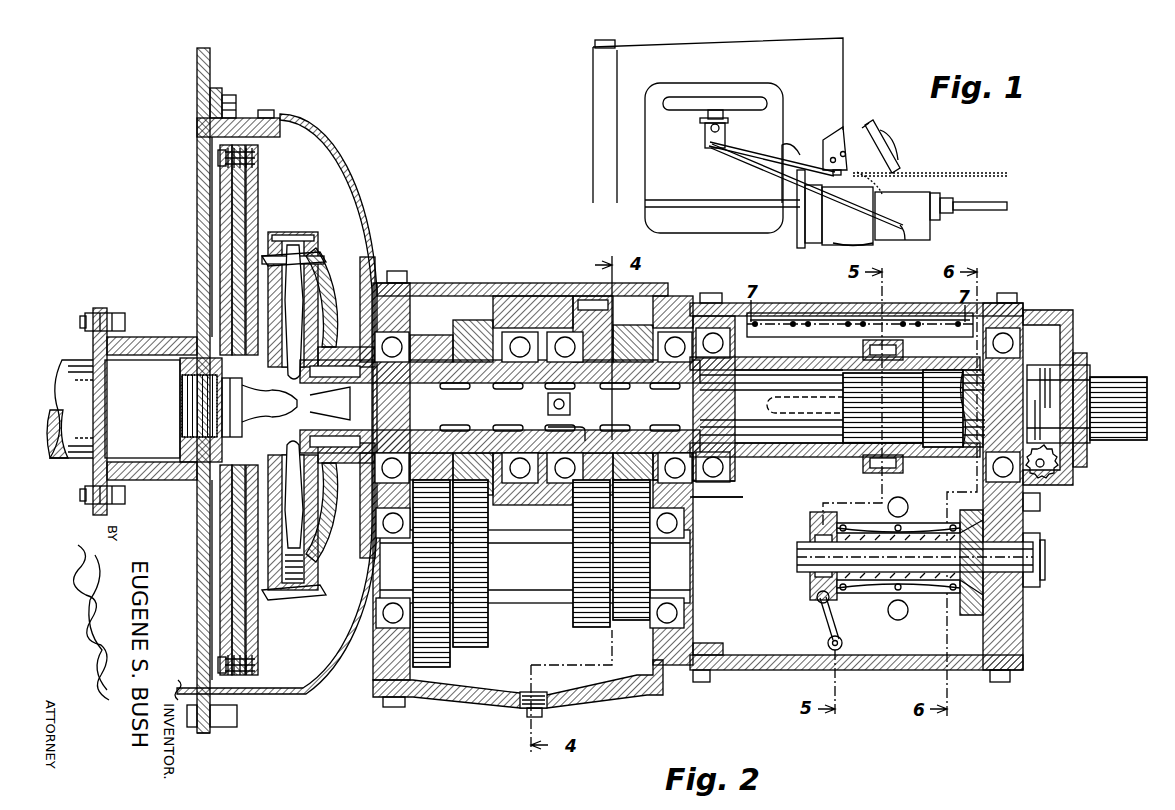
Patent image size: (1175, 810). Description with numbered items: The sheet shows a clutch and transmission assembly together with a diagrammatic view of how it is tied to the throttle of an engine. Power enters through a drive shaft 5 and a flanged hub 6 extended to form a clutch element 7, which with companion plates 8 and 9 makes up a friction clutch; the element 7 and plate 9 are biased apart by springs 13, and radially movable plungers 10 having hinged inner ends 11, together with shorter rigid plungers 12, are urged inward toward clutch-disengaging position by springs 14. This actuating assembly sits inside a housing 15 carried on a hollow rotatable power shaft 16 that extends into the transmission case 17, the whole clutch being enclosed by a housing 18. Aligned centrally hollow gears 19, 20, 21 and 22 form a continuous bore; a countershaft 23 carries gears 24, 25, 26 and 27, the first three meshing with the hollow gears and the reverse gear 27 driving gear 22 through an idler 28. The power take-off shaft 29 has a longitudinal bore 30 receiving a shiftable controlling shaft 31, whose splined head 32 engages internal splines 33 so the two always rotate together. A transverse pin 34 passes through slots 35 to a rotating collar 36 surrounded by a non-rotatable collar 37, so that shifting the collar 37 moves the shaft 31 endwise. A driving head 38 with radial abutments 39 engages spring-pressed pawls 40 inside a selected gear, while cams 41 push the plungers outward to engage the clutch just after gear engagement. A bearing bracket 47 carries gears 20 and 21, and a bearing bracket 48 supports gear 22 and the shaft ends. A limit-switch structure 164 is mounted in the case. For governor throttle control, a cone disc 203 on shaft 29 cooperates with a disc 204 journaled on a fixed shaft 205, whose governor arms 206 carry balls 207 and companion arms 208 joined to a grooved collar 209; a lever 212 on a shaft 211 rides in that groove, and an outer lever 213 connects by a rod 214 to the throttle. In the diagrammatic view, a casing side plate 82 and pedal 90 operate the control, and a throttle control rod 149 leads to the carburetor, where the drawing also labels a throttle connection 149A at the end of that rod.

In FIG. 2, the drive shaft 5 is at (70, 365).
In FIG. 2, the flanged hub 6 is at (108, 313).
In FIG. 2, the clutch element 7 is at (220, 243).
In FIG. 2, the clutch plate 8 is at (238, 210).
In FIG. 2, the clutch plate 9 is at (258, 197).
In FIG. 2, the plunger 10 is at (327, 262).
In FIG. 2, the hinged inner end 11 is at (303, 375).
In FIG. 2, the plunger 12 is at (300, 477).
In FIG. 2, the spring 13 is at (258, 157).
In FIG. 2, the spring 14 is at (297, 240).
In FIG. 2, the housing 15 is at (328, 290).
In FIG. 2, the hollow rotatable power shaft 16 is at (408, 385).
In FIG. 1, the transmission case 17 is at (863, 238).
In FIG. 2, the transmission case 17 is at (465, 283).
In FIG. 2, the housing 18 is at (302, 687).
In FIG. 2, the hollow gear 19 is at (425, 338).
In FIG. 2, the hollow gear 20 is at (470, 325).
In FIG. 2, the hollow gear 21 is at (593, 302).
In FIG. 2, the hollow gear 22 is at (635, 338).
In FIG. 2, the countershaft 23 is at (530, 601).
In FIG. 2, the countershaft gear 24 is at (430, 664).
In FIG. 2, the countershaft gear 25 is at (475, 647).
In FIG. 2, the countershaft gear 26 is at (580, 628).
In FIG. 2, the reverse driving gear 27 is at (628, 620).
In FIG. 2, the idler 28 is at (698, 504).
In FIG. 1, the power take-off shaft 29 is at (950, 210).
In FIG. 2, the power take-off shaft 29 is at (1095, 375).
In FIG. 2, the longitudinal bore 30 is at (770, 450).
In FIG. 2, the transmission and clutch-controlling shaft 31 is at (690, 405).
In FIG. 2, the splined head 32 is at (848, 385).
In FIG. 2, the internal splines 33 is at (733, 430).
In FIG. 2, the transverse pin 34 is at (872, 405).
In FIG. 2, the slot 35 is at (935, 435).
In FIG. 2, the rotating collar 36 is at (895, 472).
In FIG. 2, the non-rotatable collar 37 is at (863, 470).
In FIG. 2, the driving head 38 is at (580, 425).
In FIG. 2, the radial abutment 39 is at (548, 404).
In FIG. 2, the spring-pressed pawl 40 is at (460, 389).
In FIG. 2, the cam 41 is at (246, 398).
In FIG. 2, the bearing bracket 47 is at (522, 502).
In FIG. 2, the bearing bracket 48 is at (738, 497).
In FIG. 1, the side plate 82 is at (835, 132).
In FIG. 1, the pedal 90 is at (885, 145).
In FIG. 1, the throttle control rod 149 is at (795, 165).
In FIG. 1, the seat pivot bracket 149A is at (705, 138).
In FIG. 2, the limit-switch structure 164 is at (823, 315).
In FIG. 2, the cone disc 203 is at (1035, 315).
In FIG. 2, the disc 204 is at (975, 617).
In FIG. 2, the shaft 205 is at (1030, 585).
In FIG. 2, the governor arm 206 is at (927, 593).
In FIG. 2, the governor ball 207 is at (900, 620).
In FIG. 2, the companion arm 208 is at (870, 588).
In FIG. 2, the grooved collar 209 is at (810, 586).
In FIG. 2, the shaft 211 is at (828, 644).
In FIG. 2, the lever 212 is at (826, 620).
In FIG. 1, the lever 213 is at (908, 232).
In FIG. 1, the rod 214 is at (780, 171).